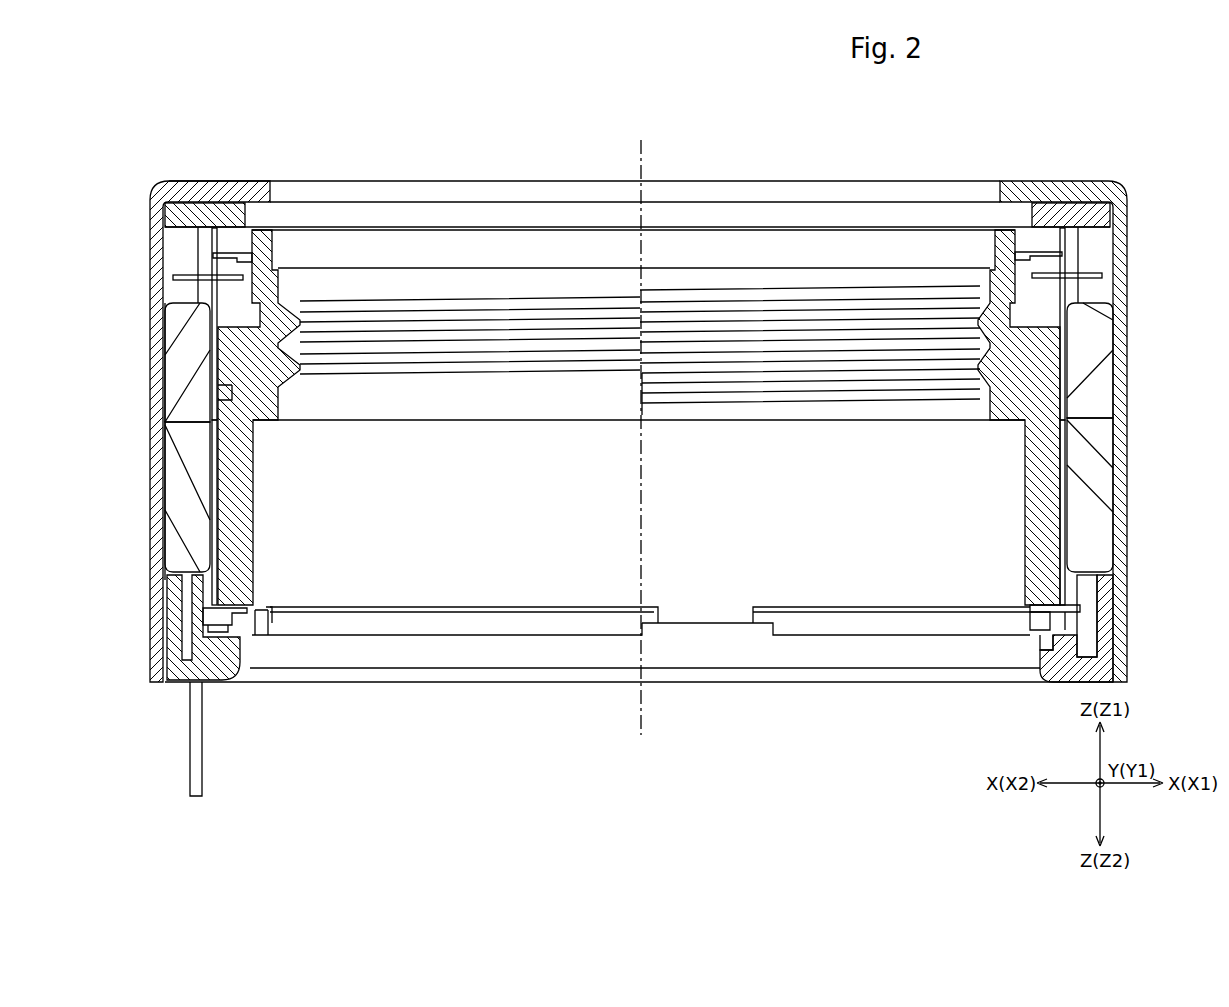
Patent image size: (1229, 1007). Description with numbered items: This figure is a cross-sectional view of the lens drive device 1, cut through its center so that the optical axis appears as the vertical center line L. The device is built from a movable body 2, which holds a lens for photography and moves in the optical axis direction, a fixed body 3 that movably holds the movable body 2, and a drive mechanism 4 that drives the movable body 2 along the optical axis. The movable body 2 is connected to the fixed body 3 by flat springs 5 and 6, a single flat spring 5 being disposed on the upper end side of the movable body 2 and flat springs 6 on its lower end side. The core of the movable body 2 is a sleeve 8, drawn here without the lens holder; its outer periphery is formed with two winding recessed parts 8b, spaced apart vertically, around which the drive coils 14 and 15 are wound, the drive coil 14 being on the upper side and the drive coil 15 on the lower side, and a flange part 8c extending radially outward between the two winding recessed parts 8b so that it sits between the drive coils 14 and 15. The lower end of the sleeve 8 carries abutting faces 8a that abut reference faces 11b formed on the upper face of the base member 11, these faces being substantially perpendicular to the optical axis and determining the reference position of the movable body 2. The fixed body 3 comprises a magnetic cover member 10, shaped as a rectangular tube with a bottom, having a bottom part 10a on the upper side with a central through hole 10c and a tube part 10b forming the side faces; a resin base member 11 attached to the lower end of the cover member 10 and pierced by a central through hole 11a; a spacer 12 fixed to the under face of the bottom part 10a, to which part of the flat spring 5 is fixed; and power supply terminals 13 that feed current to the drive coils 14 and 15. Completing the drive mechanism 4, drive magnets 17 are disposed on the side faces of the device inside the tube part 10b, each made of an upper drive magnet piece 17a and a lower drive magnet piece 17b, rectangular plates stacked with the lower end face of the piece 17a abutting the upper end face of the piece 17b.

The lens drive device 1 is at (1160, 157).
The movable body 2 is at (1000, 228).
The fixed body 3 is at (1125, 521).
The drive mechanism 4 is at (1150, 297).
The flat spring 5 is at (1097, 273).
The flat spring 6 is at (476, 613).
The sleeve 8 is at (586, 431).
The abutting face 8a is at (262, 633).
The winding recessed part 8b is at (262, 375).
The flange part 8c is at (212, 448).
The cover member 10 is at (605, 203).
The bottom part 10a is at (240, 181).
The tube part 10b is at (160, 247).
The through hole 10c is at (278, 196).
The base member 11 is at (1115, 632).
The through hole 11a is at (244, 668).
The reference face 11b is at (270, 612).
The spacer 12 is at (1108, 233).
The power supply terminal 13 is at (190, 738).
The drive coil 14 is at (1065, 363).
The drive coil 15 is at (1065, 495).
The drive magnet 17 is at (98, 376).
The drive magnet piece 17a is at (163, 381).
The drive magnet piece 17b is at (163, 436).
The axis line L is at (643, 147).